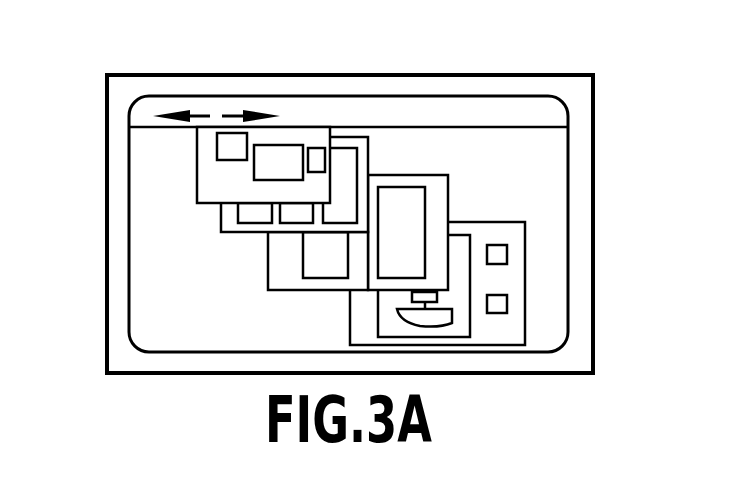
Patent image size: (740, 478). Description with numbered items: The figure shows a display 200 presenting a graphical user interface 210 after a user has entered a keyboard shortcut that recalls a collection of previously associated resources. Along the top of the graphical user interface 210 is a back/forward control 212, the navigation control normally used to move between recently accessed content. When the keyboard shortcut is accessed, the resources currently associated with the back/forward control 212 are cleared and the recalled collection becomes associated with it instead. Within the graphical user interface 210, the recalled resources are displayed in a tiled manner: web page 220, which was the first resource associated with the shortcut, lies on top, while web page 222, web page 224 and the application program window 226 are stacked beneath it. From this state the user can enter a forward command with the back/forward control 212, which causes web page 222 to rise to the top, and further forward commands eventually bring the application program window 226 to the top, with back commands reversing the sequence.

The display 200 is at (594, 187).
The graphical user interface 210 is at (553, 258).
The back/forward control 212 is at (200, 108).
The web page 220 is at (196, 150).
The web page 222 is at (223, 218).
The web page 224 is at (268, 258).
The application program window 226 is at (525, 322).